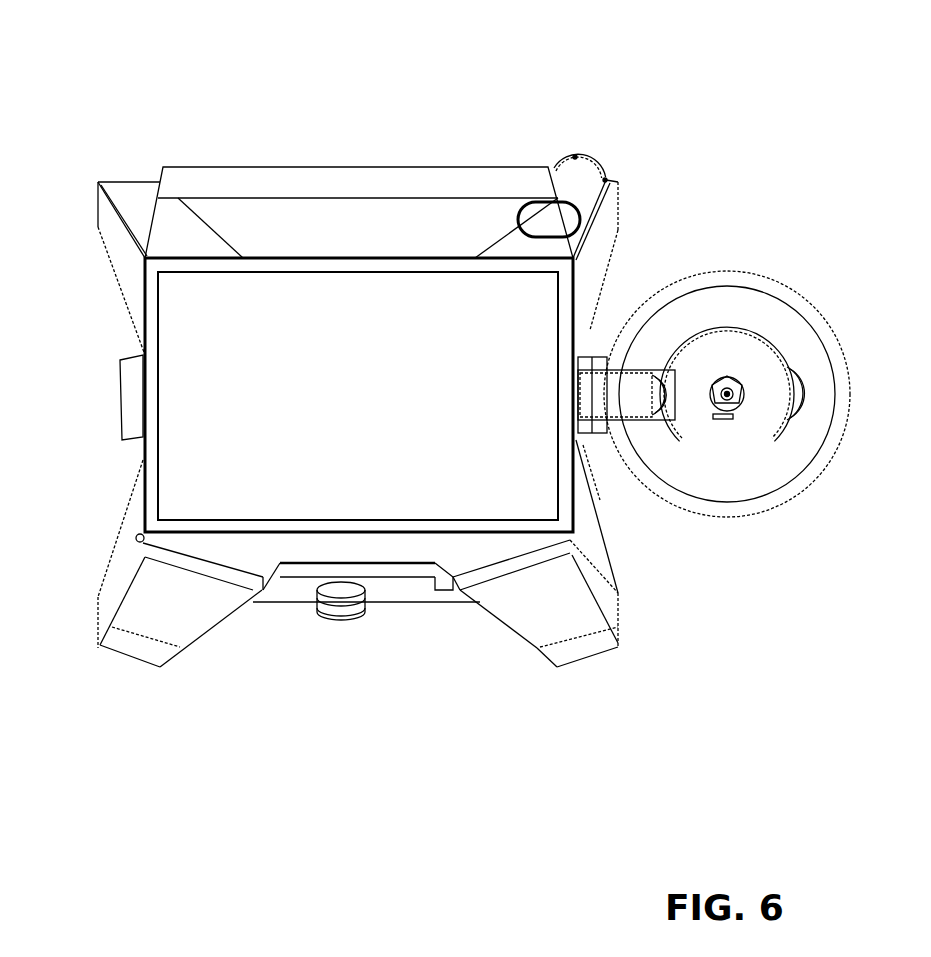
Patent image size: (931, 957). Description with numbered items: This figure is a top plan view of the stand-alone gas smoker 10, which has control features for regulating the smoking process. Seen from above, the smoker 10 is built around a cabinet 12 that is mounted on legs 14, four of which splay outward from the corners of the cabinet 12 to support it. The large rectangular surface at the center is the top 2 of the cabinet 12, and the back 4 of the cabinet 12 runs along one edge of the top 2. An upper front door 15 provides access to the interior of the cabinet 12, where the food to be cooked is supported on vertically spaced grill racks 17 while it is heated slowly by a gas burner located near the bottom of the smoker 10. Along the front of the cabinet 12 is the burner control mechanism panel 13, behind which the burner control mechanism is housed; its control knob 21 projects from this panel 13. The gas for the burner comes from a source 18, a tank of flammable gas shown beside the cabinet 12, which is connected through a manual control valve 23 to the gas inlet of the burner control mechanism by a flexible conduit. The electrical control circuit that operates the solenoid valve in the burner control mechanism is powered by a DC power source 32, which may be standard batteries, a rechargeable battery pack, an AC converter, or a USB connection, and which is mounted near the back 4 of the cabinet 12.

The stand-alone gas smoker 10 is at (743, 120).
The top 2 is at (357, 372).
The back 4 is at (340, 228).
The cabinet 12 is at (142, 455).
The burner control mechanism panel 13 is at (410, 593).
The legs 14 is at (128, 200).
The upper front door 15 is at (257, 555).
The grill racks 17 is at (611, 425).
The source of flammable gas 18 is at (800, 305).
The control knob 21 is at (337, 615).
The manual control valve 23 is at (740, 410).
The DC power source 32 is at (590, 183).